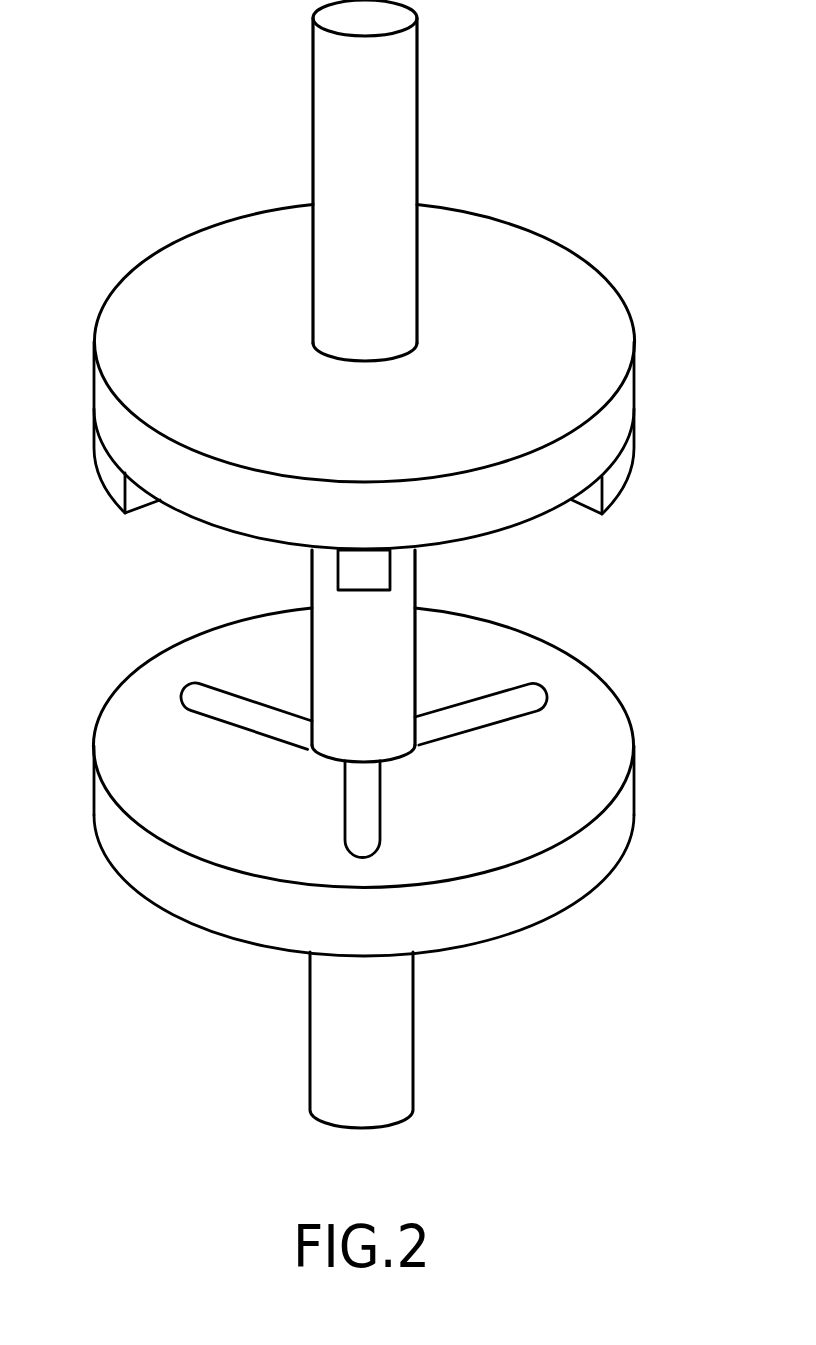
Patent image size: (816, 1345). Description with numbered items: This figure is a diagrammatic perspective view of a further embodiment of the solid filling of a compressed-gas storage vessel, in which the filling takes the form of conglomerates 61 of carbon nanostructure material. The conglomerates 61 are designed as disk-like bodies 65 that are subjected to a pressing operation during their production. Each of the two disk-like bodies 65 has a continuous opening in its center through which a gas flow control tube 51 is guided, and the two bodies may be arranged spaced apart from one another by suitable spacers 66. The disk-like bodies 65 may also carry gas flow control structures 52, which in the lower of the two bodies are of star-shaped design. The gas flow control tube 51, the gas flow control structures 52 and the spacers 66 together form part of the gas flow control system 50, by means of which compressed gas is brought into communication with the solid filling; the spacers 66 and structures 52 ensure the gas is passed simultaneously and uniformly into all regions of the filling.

The gas flow control system 50 is at (250, 80).
The gas flow control tube 51 is at (412, 108).
The gas flow control structures 52 is at (197, 693).
The conglomerates 61 is at (130, 250).
The disk-like bodies 65 is at (602, 290).
The spacers 66 is at (108, 478).